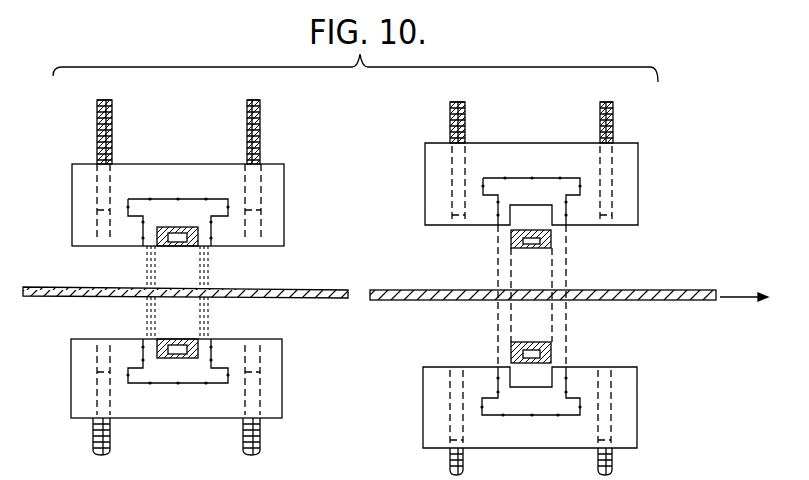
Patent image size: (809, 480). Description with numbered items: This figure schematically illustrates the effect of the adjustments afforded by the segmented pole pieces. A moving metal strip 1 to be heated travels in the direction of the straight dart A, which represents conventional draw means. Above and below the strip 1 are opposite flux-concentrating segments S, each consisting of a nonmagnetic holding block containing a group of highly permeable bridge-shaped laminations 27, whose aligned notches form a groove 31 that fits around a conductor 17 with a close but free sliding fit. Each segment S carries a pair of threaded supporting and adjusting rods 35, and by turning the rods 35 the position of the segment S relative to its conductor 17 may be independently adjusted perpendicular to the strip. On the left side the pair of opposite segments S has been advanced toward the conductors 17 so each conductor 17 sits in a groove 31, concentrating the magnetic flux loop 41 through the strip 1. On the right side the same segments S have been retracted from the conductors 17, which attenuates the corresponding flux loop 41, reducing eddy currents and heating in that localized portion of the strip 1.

The segment S is at (287, 210).
The laminations 27 is at (163, 222).
The conductor 17 is at (195, 247).
The groove 31 is at (150, 237).
The magnetic flux loop 41 is at (209, 270).
The threaded supporting and adjusting rods 35 is at (112, 108).
The moving metal strip 1 is at (320, 298).
The straight dart A is at (737, 297).